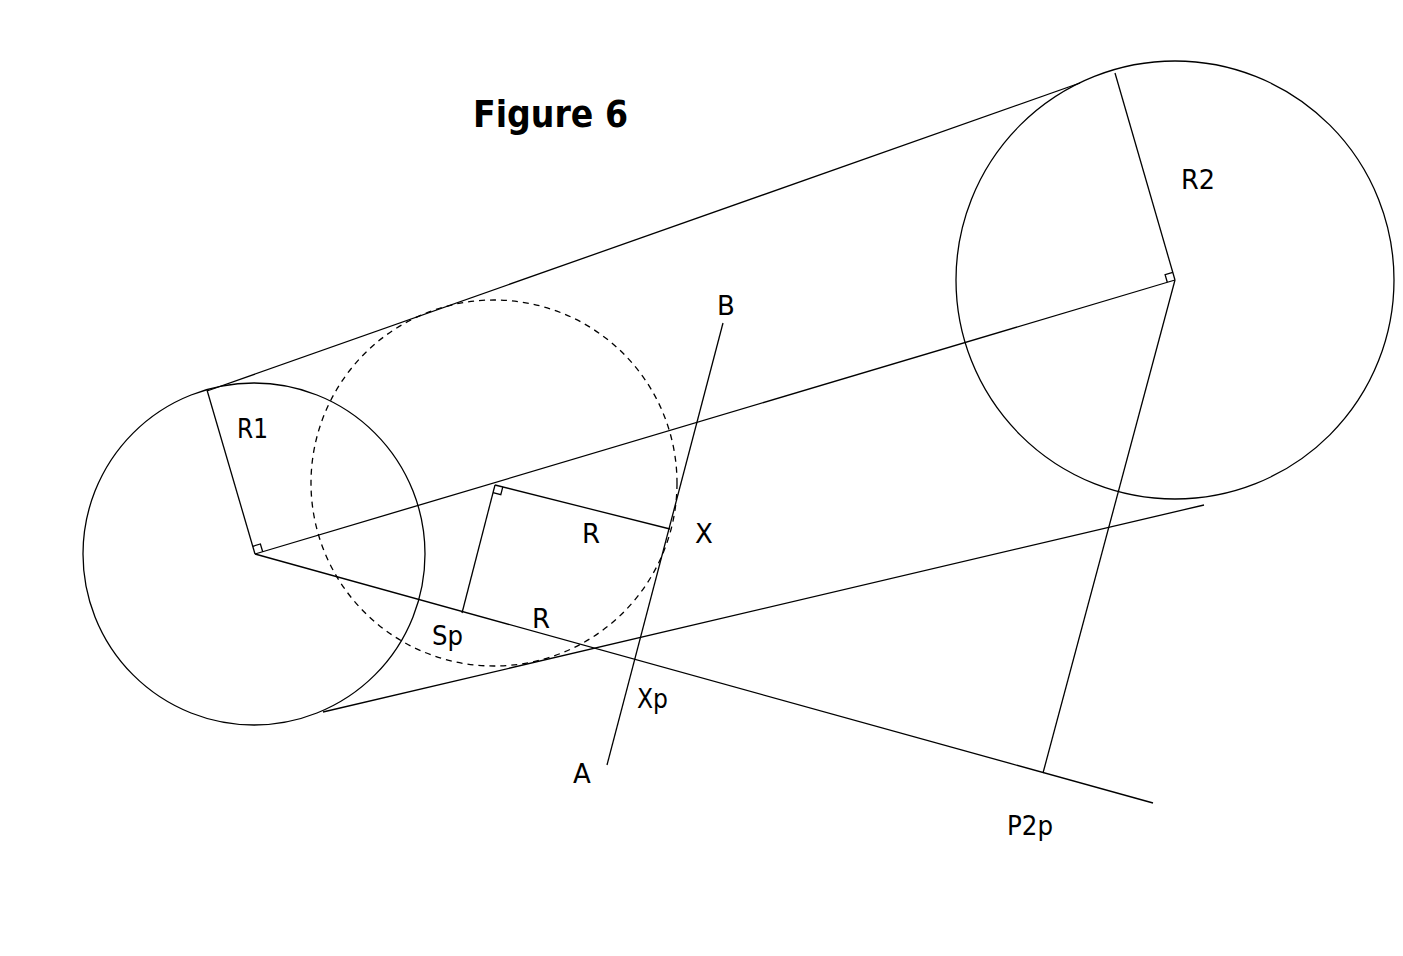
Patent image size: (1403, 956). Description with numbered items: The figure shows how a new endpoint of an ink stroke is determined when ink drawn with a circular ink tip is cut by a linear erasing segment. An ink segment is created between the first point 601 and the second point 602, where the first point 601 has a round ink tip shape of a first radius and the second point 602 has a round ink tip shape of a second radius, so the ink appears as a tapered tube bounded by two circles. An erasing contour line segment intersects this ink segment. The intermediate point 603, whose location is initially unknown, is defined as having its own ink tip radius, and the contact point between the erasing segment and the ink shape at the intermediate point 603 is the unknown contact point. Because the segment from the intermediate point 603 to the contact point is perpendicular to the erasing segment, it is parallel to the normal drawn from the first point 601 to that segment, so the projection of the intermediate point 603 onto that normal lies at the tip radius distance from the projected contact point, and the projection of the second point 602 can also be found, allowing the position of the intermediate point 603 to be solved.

The point P1 601 is at (254, 554).
The point P2 602 is at (1175, 280).
The point S 603 is at (494, 483).